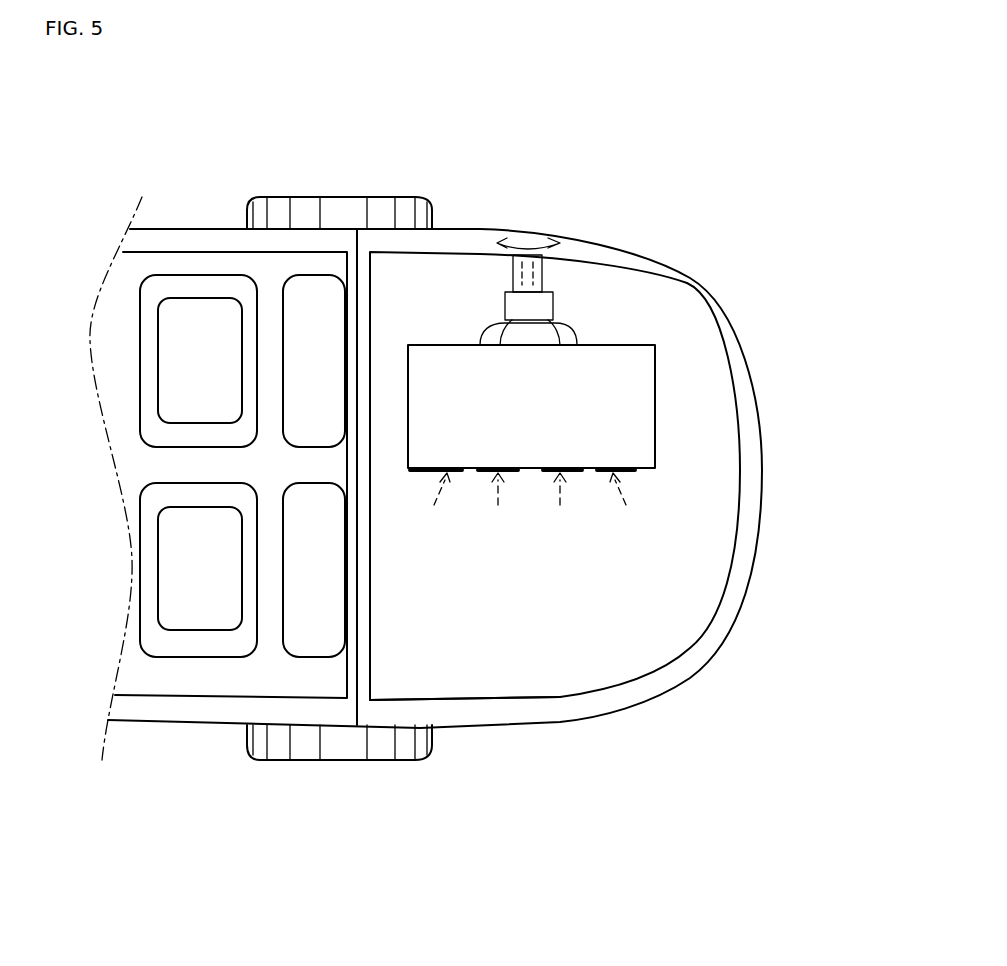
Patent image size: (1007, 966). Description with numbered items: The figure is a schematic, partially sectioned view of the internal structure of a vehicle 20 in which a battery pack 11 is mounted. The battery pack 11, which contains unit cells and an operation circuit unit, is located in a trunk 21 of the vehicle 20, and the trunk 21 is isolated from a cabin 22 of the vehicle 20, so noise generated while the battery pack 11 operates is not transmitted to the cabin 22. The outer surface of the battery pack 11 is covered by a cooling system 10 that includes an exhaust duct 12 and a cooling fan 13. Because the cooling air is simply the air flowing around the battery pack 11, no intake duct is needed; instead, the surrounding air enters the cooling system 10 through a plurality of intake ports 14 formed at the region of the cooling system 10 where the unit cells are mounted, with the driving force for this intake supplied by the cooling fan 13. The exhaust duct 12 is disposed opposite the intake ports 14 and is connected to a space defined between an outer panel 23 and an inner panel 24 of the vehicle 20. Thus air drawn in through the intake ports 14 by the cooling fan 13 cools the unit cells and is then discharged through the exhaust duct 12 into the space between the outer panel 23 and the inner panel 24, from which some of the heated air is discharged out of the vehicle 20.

The cooling system 10 is at (619, 414).
The battery pack 11 is at (548, 424).
The exhaust duct 12 is at (513, 265).
The cooling fan 13 is at (583, 318).
The intake ports 14 is at (630, 472).
The vehicle 20 is at (466, 461).
The trunk 21 is at (583, 668).
The cabin 22 is at (178, 682).
The outer panel 23 is at (683, 268).
The inner panel 24 is at (723, 352).